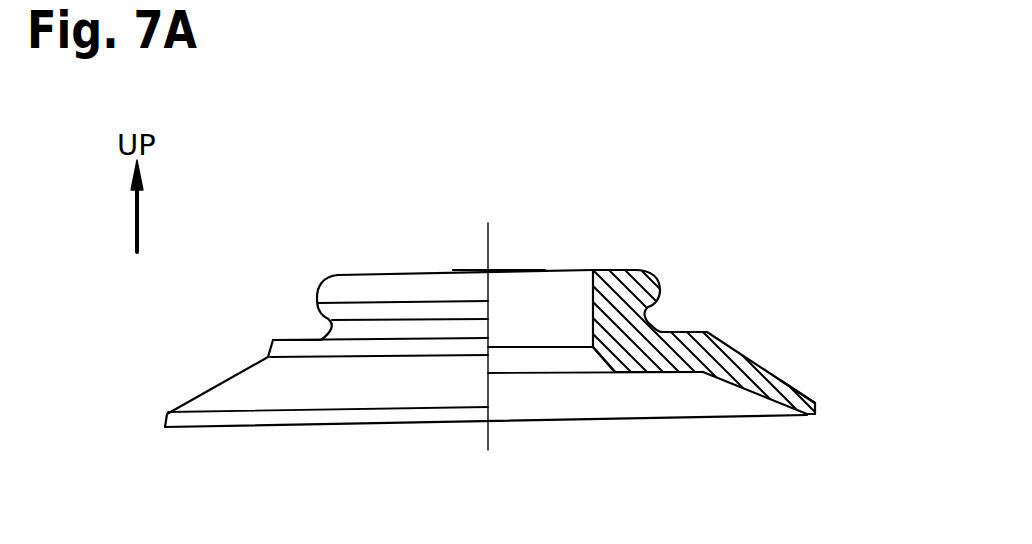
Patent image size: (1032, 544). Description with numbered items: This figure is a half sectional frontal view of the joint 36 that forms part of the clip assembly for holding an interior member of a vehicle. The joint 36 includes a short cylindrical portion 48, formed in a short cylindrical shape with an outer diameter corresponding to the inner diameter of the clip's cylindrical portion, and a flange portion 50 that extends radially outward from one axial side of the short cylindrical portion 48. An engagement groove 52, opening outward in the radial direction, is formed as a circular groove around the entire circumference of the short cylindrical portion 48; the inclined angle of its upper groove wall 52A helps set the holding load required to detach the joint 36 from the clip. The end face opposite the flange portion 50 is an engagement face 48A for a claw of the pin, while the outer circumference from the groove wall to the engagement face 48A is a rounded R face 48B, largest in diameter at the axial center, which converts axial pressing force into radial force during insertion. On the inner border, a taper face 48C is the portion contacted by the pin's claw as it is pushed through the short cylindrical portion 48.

The joint 36 is at (812, 280).
The short cylindrical portion 48 is at (604, 268).
The engagement face 48A is at (545, 270).
The R face 48B is at (645, 273).
The taper face 48C is at (598, 358).
The flange portion 50 is at (766, 375).
The engagement groove 52 is at (652, 323).
The groove wall 52A is at (658, 308).